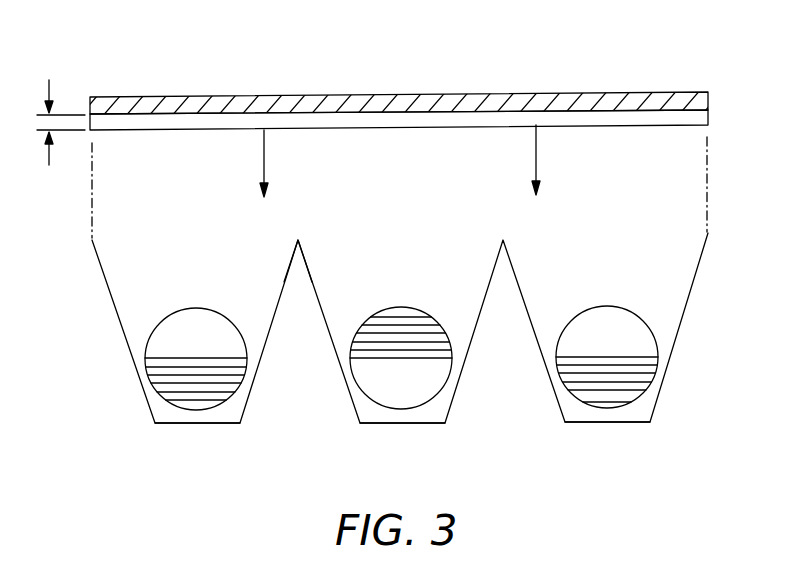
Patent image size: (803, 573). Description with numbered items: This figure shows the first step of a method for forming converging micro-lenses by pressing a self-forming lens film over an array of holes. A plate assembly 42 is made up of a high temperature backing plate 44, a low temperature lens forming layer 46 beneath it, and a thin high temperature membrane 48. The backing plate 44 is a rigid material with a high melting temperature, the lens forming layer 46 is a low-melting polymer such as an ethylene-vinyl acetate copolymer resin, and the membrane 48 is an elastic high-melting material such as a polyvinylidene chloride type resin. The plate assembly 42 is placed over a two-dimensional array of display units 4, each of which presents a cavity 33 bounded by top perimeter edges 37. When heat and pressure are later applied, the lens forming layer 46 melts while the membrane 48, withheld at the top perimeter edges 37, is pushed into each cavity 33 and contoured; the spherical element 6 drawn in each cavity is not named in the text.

The plate assembly 42 is at (381, 87).
The high temperature backing plate 44 is at (100, 112).
The low temperature lens forming layer 46 is at (156, 130).
The thin high temperature membrane 48 is at (537, 143).
The cavities 33 is at (133, 308).
The top perimeter edges 37 is at (299, 243).
The display units 4 is at (195, 425).
The spherical element 6 is at (633, 340).